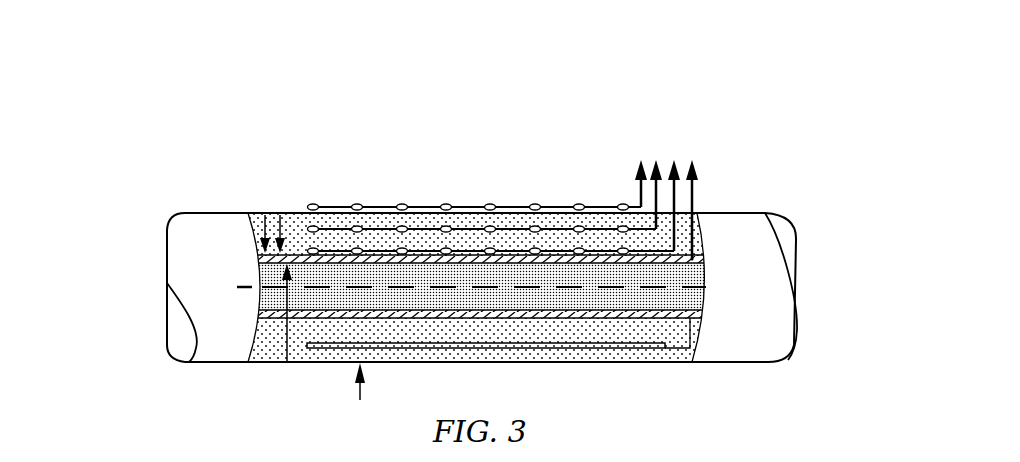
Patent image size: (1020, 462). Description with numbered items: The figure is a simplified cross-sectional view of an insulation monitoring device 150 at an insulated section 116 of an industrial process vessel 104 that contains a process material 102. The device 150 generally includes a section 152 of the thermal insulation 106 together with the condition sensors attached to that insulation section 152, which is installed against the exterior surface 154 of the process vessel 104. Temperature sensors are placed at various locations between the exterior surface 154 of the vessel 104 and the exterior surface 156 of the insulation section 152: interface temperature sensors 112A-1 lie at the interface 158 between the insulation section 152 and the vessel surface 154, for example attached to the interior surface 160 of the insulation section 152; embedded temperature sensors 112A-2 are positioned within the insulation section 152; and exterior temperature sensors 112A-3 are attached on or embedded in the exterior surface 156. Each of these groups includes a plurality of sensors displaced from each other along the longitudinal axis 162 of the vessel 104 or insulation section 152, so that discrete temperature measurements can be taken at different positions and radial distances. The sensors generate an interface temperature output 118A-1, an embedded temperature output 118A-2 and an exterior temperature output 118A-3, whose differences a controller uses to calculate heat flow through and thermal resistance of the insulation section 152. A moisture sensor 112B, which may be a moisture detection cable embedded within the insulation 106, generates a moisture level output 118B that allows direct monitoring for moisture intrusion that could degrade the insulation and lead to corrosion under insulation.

The process material 102 is at (264, 303).
The process vessel 104 is at (260, 259).
The thermal insulation 106 is at (262, 346).
The interface temperature sensors 112A-1 is at (318, 250).
The embedded temperature sensors 112A-2 is at (452, 228).
The exterior temperature sensors 112A-3 is at (402, 204).
The moisture sensor 112B is at (610, 349).
The insulated section 116 is at (183, 111).
The interface temperature output 118A-1 is at (676, 157).
The embedded temperature output 118A-2 is at (657, 158).
The exterior temperature output 118A-3 is at (638, 166).
The moisture level output 118B is at (694, 197).
The insulation monitoring device 150 is at (577, 172).
The insulation section 152 is at (258, 363).
The exterior surface of the process vessel 154 is at (265, 215).
The exterior surface of the insulation section 156 is at (357, 393).
The interface 158 is at (280, 215).
The interior surface of the insulation section 160 is at (287, 362).
The longitudinal axis 162 is at (733, 287).